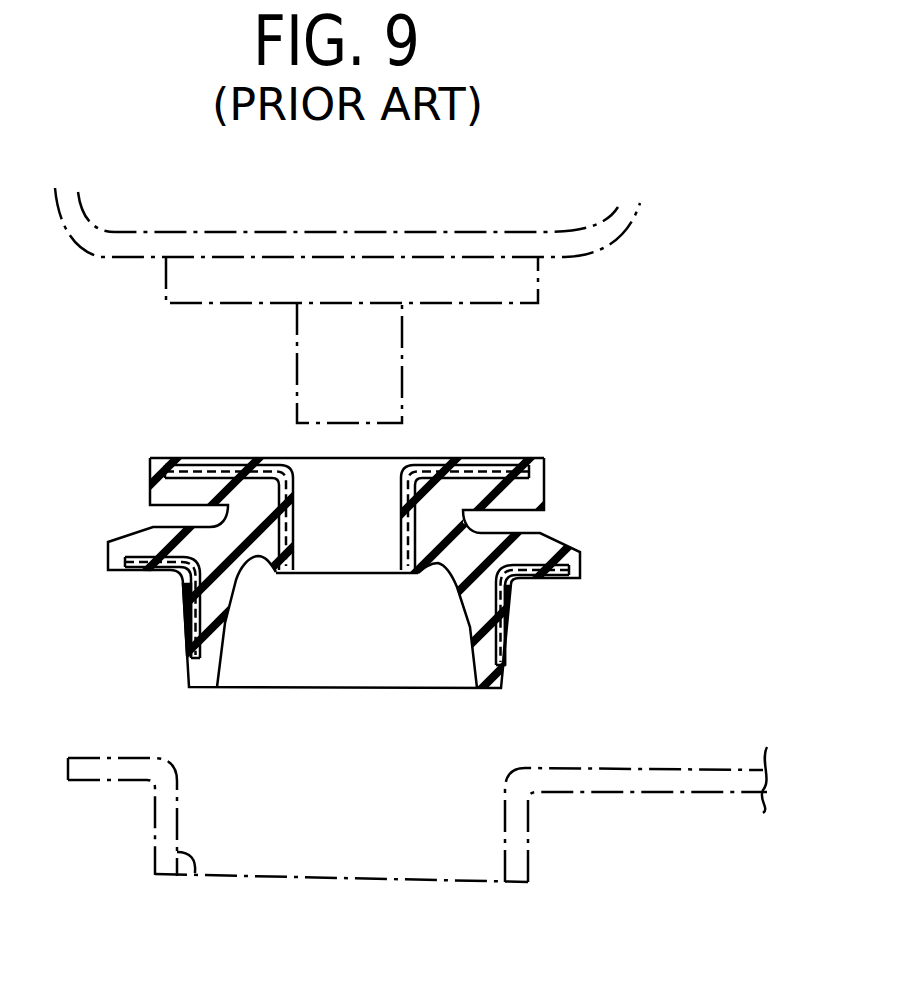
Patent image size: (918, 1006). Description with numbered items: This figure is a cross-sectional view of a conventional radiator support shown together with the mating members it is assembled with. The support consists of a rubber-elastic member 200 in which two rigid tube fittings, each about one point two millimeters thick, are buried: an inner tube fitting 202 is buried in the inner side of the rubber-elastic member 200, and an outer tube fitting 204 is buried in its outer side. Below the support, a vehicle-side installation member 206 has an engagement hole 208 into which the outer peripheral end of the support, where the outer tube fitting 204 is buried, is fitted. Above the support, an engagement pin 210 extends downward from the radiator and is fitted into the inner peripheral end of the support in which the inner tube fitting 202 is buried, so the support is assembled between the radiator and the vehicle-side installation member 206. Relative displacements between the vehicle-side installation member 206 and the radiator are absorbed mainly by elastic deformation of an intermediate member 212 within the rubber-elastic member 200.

The rubber-elastic member 200 is at (555, 530).
The inner tube fitting 202 is at (297, 524).
The outer tube fitting 204 is at (188, 620).
The vehicle-side installation member 206 is at (668, 780).
The engagement hole 208 is at (193, 876).
The engagement pin 210 is at (377, 366).
The intermediate member 212 is at (445, 568).